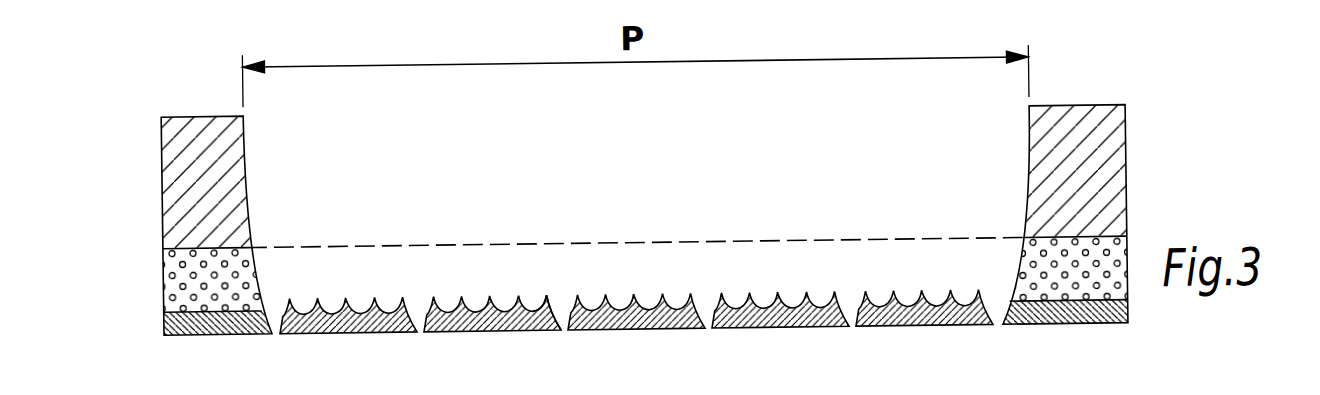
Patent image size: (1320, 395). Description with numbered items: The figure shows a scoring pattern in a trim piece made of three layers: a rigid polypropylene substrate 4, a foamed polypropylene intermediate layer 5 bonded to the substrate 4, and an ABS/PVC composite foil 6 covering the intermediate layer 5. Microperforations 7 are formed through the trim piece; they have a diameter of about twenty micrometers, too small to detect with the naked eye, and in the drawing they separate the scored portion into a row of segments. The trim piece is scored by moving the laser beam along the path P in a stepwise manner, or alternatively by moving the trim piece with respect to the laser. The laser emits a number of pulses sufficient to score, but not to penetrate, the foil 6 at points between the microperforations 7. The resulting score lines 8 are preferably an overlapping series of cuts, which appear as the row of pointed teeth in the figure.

The rigid polypropylene substrate 4 is at (173, 154).
The foamed polypropylene intermediate layer 5 is at (173, 272).
The ABS/PVC composite foil 6 is at (173, 325).
The microperforations 7 is at (278, 332).
The score lines 8 is at (537, 300).